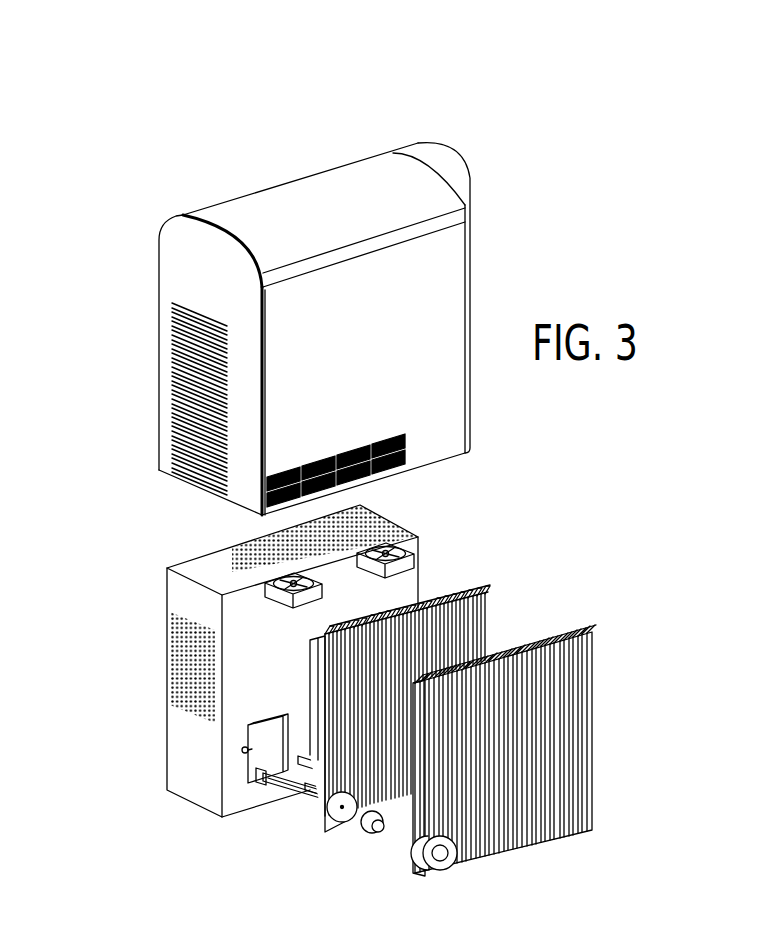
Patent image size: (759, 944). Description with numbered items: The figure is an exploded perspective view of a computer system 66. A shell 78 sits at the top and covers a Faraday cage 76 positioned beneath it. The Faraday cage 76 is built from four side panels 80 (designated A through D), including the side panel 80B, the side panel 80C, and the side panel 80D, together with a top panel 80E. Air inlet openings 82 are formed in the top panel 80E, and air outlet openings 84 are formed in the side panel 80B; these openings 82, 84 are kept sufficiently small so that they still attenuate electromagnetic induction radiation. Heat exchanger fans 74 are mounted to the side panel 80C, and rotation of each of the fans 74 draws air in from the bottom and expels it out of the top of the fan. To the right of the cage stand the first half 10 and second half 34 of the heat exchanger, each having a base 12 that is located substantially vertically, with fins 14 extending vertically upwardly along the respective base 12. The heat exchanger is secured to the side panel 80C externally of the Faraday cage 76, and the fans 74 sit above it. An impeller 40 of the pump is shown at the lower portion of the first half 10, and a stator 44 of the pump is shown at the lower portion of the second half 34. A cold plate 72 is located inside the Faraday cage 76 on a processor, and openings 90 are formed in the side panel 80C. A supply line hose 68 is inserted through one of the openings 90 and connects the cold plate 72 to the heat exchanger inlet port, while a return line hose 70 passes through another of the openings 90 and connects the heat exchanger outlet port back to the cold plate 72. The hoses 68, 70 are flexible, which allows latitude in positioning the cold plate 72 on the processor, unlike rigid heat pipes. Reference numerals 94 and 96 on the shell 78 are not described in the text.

The computer system 66 is at (251, 122).
The shell 78 is at (359, 176).
The side vent openings 96 is at (190, 443).
The front vent grille 94 is at (390, 472).
The Faraday cage 76 is at (145, 590).
The top panel 80E is at (207, 567).
The air inlet openings 82 is at (388, 524).
The air outlet openings 84 is at (170, 657).
The side panel 80B is at (178, 752).
The side panel 80C is at (231, 628).
The side panel 80D is at (446, 577).
The side panels 80 is at (264, 808).
The heat exchanger fans 74 is at (400, 565).
The openings 90 is at (265, 714).
The return line hose 70 is at (300, 797).
The supply line hose 68 is at (313, 797).
The cold plate 72 is at (260, 805).
The first half 10 is at (437, 726).
The base 12 is at (488, 601).
The impeller 40 is at (374, 835).
The second half 34 is at (527, 748).
The fins 14 is at (583, 748).
The stator 44 is at (440, 866).